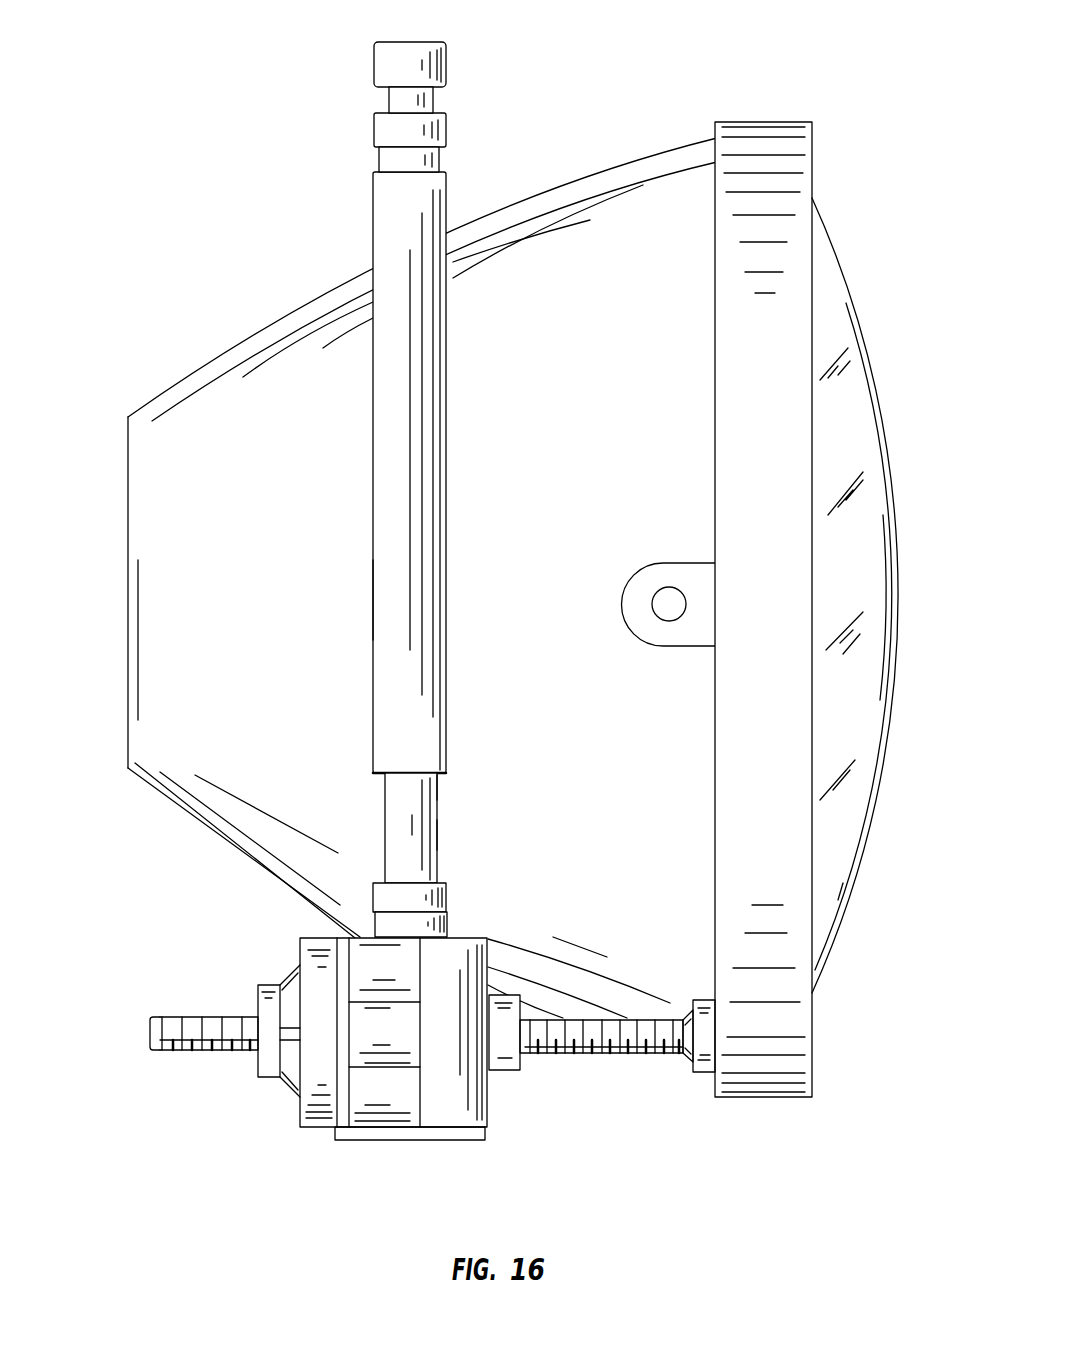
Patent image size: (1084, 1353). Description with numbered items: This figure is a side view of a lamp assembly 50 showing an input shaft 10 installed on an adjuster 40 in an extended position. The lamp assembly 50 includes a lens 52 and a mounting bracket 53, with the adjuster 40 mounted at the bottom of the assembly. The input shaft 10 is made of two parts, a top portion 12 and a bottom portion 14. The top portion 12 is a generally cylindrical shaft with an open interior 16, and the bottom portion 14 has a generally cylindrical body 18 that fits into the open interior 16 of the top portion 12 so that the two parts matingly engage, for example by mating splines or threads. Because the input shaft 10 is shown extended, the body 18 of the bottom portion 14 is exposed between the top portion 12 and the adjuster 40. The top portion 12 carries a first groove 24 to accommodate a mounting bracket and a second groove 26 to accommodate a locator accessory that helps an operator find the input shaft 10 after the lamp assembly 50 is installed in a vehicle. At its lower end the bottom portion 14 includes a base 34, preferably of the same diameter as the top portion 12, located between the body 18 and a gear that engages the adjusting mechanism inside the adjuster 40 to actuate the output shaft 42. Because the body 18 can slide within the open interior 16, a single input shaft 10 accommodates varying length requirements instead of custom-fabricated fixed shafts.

The input shaft 10 is at (392, 422).
The top portion 12 is at (333, 656).
The bottom portion 14 is at (457, 837).
The open interior 16 is at (449, 785).
The body 18 is at (393, 837).
The first groove 24 is at (387, 157).
The second groove 26 is at (390, 98).
The base 34 is at (447, 923).
The adjuster 40 is at (455, 1103).
The output shaft 42 is at (552, 1053).
The lamp assembly 50 is at (146, 910).
The lens 52 is at (862, 540).
The mounting bracket 53 is at (787, 1018).